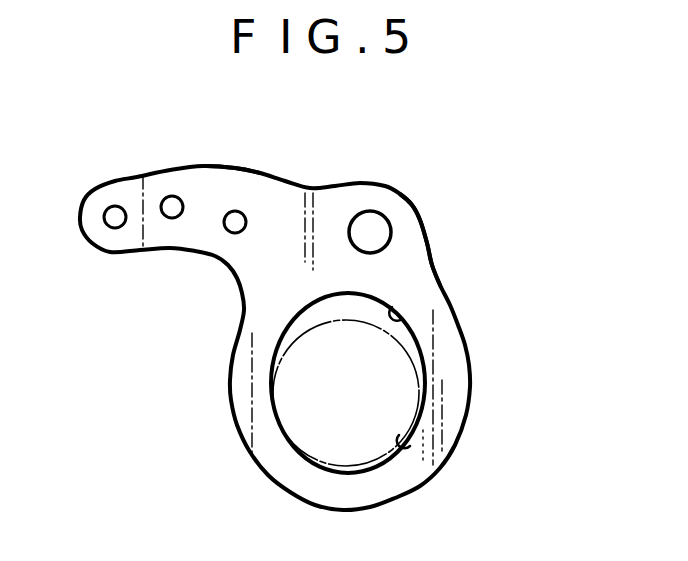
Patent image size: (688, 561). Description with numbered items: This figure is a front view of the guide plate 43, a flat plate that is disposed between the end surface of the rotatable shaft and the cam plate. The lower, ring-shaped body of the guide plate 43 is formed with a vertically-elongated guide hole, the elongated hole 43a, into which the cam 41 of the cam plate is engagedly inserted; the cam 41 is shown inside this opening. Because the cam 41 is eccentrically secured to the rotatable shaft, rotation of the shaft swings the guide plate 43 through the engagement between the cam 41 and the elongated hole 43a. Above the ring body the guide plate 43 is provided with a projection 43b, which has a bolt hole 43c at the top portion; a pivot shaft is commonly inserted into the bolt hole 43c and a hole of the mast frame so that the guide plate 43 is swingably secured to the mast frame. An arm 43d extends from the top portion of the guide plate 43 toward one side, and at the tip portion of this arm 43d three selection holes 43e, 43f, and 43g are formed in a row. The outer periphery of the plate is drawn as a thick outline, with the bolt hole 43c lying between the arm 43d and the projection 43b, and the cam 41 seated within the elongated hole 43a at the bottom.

The guide plate 43 is at (460, 340).
The elongated hole 43a is at (408, 320).
The projection 43b is at (410, 233).
The bolt hole 43c is at (388, 213).
The arm 43d is at (224, 188).
The selection hole 43e is at (116, 220).
The selection hole 43f is at (174, 195).
The selection hole 43g is at (244, 221).
The cam 41 is at (410, 440).